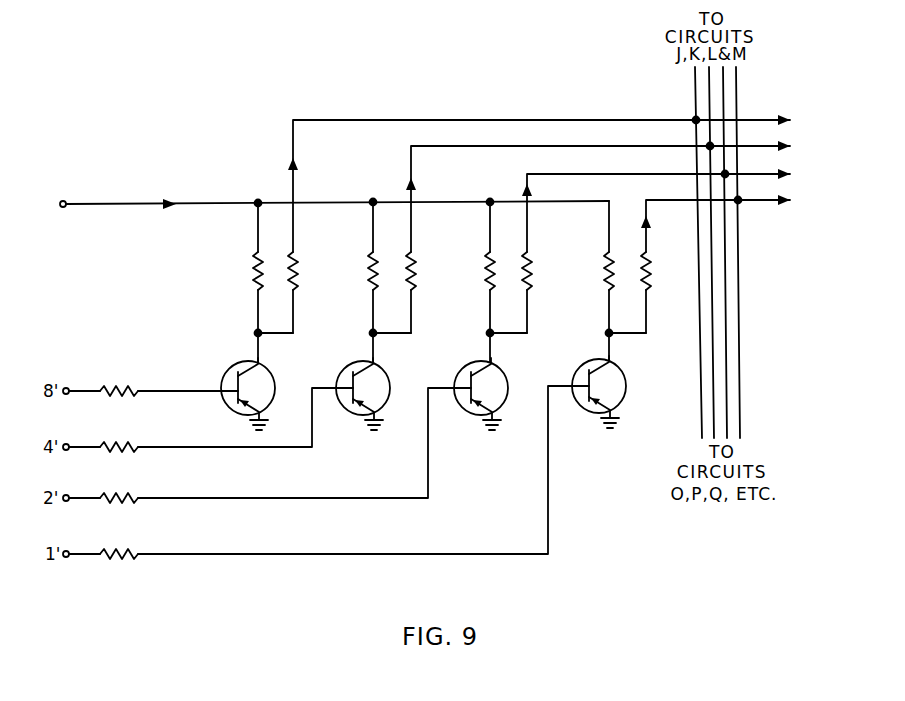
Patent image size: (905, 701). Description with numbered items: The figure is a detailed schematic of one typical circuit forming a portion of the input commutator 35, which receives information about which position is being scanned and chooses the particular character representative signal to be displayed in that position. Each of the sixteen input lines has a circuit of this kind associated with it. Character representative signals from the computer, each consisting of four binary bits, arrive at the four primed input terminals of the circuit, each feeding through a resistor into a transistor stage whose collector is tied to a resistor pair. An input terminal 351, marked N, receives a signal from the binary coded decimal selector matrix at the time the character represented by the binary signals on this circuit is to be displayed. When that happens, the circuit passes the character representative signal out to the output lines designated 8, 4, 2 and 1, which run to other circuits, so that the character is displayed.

The input terminal 351 is at (65, 200).
The input commutator 35 is at (463, 586).
The output line 8 is at (547, 181).
The output line 4 is at (606, 194).
The output line 2 is at (664, 208).
The output line 1 is at (725, 221).